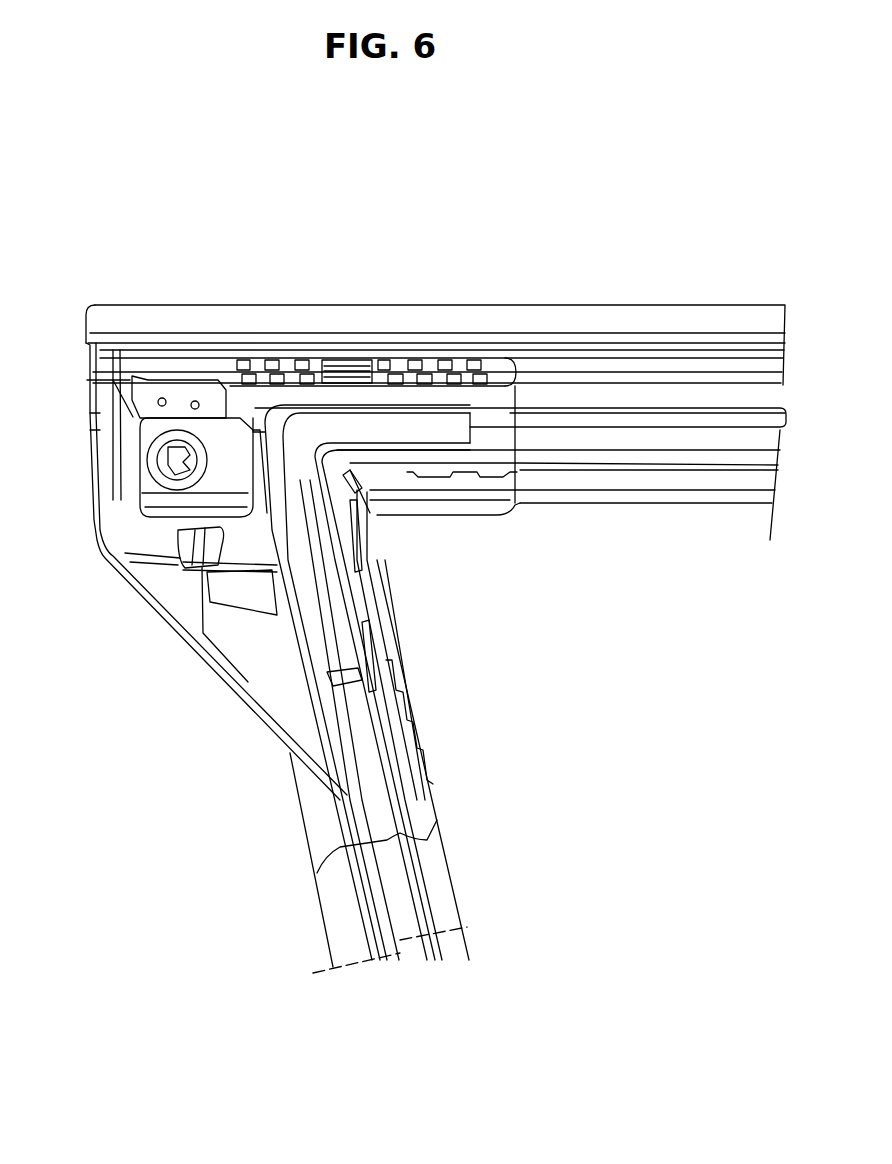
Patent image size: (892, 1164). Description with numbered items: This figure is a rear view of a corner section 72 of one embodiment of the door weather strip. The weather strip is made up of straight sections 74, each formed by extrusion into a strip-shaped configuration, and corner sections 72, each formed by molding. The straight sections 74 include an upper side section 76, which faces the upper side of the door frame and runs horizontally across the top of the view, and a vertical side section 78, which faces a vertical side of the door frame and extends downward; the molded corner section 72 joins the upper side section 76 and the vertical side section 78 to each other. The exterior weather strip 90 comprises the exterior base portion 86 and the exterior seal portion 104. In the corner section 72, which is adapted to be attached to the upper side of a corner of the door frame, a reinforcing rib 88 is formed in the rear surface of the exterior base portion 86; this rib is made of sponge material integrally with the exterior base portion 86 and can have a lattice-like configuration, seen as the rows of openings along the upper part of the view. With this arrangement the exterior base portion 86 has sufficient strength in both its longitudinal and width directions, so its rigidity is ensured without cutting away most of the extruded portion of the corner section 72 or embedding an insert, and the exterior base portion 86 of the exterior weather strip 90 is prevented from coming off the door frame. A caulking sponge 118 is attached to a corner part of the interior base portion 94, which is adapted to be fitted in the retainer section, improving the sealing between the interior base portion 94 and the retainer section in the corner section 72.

The corner section 72 is at (252, 652).
The straight section 74 is at (650, 305).
The upper side section 76 is at (705, 480).
The vertical side section 78 is at (340, 912).
The exterior base portion 86 is at (273, 352).
The reinforcing rib 88 is at (373, 380).
The exterior weather strip 90 is at (478, 305).
The interior base portion 94 is at (490, 438).
The exterior seal portion 104 is at (418, 312).
The caulking sponge 118 is at (397, 430).